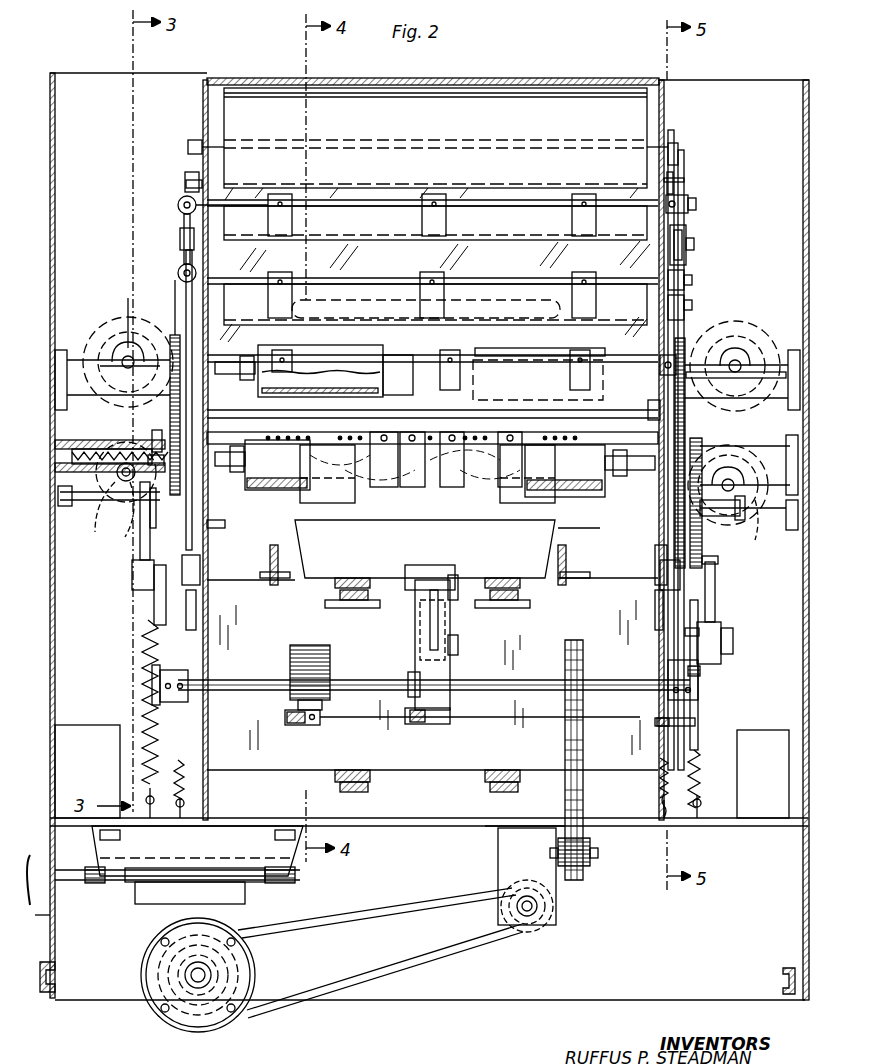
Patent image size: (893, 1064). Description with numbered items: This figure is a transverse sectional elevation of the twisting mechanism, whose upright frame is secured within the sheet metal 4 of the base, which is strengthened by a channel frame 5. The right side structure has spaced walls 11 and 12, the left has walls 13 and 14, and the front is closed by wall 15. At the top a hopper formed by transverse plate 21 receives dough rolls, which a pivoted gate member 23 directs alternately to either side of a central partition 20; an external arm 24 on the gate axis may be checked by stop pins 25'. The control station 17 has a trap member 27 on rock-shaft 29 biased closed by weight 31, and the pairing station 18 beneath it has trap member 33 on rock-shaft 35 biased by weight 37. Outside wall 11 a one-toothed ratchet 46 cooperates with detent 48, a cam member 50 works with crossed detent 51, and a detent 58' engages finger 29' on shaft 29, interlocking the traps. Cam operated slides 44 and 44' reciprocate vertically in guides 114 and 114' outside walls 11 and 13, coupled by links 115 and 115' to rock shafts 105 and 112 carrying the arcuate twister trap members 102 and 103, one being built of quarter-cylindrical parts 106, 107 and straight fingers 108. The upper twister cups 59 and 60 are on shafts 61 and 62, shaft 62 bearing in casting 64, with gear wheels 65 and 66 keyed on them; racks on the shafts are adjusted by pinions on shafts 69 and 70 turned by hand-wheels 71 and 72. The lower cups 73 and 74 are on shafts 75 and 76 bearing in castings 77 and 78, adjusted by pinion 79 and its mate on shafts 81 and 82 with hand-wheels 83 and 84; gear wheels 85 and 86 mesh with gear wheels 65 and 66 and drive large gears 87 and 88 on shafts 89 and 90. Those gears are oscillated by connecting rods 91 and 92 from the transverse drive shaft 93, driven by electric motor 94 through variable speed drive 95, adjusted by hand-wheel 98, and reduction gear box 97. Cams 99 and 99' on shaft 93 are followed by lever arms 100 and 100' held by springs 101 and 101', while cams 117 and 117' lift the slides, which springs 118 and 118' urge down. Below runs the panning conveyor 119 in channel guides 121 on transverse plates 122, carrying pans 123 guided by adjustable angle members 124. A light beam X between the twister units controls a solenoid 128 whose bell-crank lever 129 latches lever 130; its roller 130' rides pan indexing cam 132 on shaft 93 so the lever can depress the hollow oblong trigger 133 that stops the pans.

The side wall 11 is at (664, 110).
The wall 12 is at (803, 108).
The wall 13 is at (203, 108).
The wall 14 is at (55, 108).
The front wall 15 is at (420, 826).
The control trap 17 is at (423, 220).
The pairing station 18 is at (425, 300).
The central partition 20 is at (648, 322).
The transverse plate 21 is at (202, 162).
The gate member 23 is at (435, 138).
The external arm 24 is at (680, 165).
The stop pins 25' is at (701, 179).
The trap member 27 is at (435, 223).
The rock-shaft 29 is at (432, 180).
The finger 29' is at (146, 180).
The weight 31 is at (178, 204).
The trap member 33 is at (435, 304).
The rock-shaft 35 is at (518, 284).
The weight 37 is at (178, 275).
The cam slide 44 is at (644, 560).
The cam slide 44' is at (235, 355).
The one-toothed ratchet 46 is at (688, 192).
The detent 48 is at (688, 232).
The cam member 50 is at (688, 276).
The detent 51 is at (690, 300).
The bracket 58' is at (144, 169).
The cup 59 is at (372, 390).
The cup 60 is at (490, 344).
The shaft 61 is at (270, 350).
The shaft 62 is at (648, 410).
The casting 64 is at (784, 365).
The gear wheel 65 is at (172, 338).
The gear wheel 66 is at (735, 372).
The shaft 69 is at (126, 350).
The shaft 70 is at (745, 358).
The hand-wheel 71 is at (103, 340).
The hand-wheel 72 is at (752, 320).
The cup 73 is at (262, 495).
The cup 74 is at (585, 497).
The shaft 75 is at (225, 468).
The shaft 76 is at (630, 472).
The casting 77 is at (75, 440).
The casting 78 is at (765, 500).
The pinion 79 is at (132, 488).
The shaft 81 is at (120, 488).
The shaft 82 is at (733, 518).
The hand-wheel 83 is at (118, 462).
The hand-wheel 84 is at (758, 456).
The gear wheel 85 is at (157, 432).
The gear wheel 86 is at (712, 452).
The large gear 87 is at (207, 530).
The large gear 88 is at (688, 575).
The shaft 89 is at (75, 502).
The shaft 90 is at (749, 542).
The connecting rod 91 is at (140, 560).
The connecting rod 92 is at (716, 600).
The transverse drive shaft 93 is at (518, 696).
The electric motor 94 is at (236, 1015).
The variable speed drive 95 is at (163, 962).
The reduction gear box 97 is at (498, 870).
The hand-wheel 98 is at (36, 915).
The cam 99 is at (710, 675).
The cam 99' is at (203, 677).
The lever arm 100 is at (728, 643).
The lever arm 100' is at (114, 595).
The spring 101 is at (710, 773).
The spring 101' is at (116, 719).
The trap member 102 is at (288, 410).
The trap member 103 is at (486, 412).
The rock shaft 105 is at (433, 354).
The quarter-cylindrical part 106 is at (348, 498).
The quarter-cylindrical part 107 is at (497, 500).
The intermediate straight fingers 108 is at (410, 490).
The rock shaft 112 is at (556, 434).
The guide 114 is at (680, 450).
The guide 114' is at (200, 429).
The link 115 is at (705, 354).
The link 115' is at (432, 406).
The cam 117 is at (708, 718).
The cam 117' is at (422, 715).
The spring 118 is at (609, 760).
The spring 118' is at (168, 780).
The panning conveyor 119 is at (352, 578).
The channel guides 121 is at (352, 602).
The transverse plates 122 is at (448, 775).
The pans 123 is at (560, 530).
The adjustable angle members 124 is at (275, 585).
The solenoid 128 is at (330, 657).
The bell-crank lever 129 is at (450, 660).
The pivoted lever 130 is at (479, 605).
The roller 130' is at (482, 644).
The pan indexing cam 132 is at (450, 678).
The trigger 133 is at (432, 565).
The beam of light X is at (453, 390).
The sheet metal 4 is at (800, 913).
The channel frame 5 is at (790, 978).